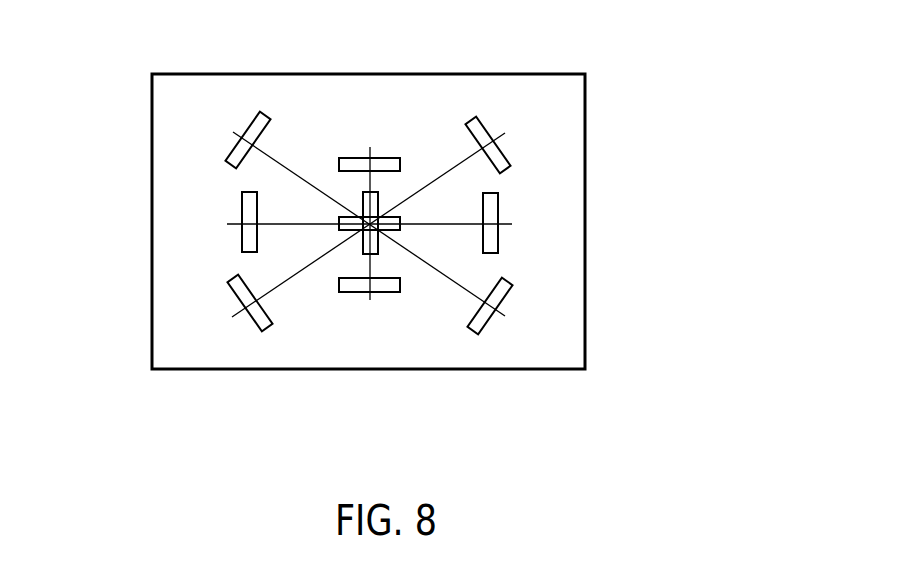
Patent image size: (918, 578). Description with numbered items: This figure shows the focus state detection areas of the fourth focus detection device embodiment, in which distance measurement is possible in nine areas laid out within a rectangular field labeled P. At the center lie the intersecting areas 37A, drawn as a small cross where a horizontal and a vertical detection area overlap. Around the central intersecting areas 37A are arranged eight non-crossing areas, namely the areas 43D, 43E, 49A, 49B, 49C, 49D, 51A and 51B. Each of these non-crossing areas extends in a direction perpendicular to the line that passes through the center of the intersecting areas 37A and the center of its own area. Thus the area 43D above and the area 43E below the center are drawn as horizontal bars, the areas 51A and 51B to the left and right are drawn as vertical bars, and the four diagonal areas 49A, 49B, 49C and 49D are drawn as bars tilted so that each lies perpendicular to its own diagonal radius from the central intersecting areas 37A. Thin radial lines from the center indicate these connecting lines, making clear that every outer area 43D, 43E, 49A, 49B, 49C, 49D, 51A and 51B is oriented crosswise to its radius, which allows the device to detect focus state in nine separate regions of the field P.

The plane P is at (570, 283).
The central intersecting areas 37A is at (382, 200).
The non-crossing area 43D is at (352, 152).
The non-crossing area 43E is at (357, 293).
The non-crossing area 49A is at (248, 125).
The non-crossing area 49B is at (512, 152).
The non-crossing area 49C is at (230, 292).
The non-crossing area 49D is at (493, 323).
The non-crossing area 51A is at (237, 217).
The non-crossing area 51B is at (502, 207).